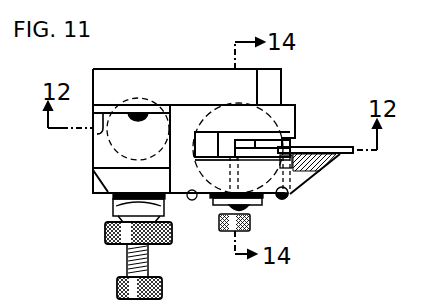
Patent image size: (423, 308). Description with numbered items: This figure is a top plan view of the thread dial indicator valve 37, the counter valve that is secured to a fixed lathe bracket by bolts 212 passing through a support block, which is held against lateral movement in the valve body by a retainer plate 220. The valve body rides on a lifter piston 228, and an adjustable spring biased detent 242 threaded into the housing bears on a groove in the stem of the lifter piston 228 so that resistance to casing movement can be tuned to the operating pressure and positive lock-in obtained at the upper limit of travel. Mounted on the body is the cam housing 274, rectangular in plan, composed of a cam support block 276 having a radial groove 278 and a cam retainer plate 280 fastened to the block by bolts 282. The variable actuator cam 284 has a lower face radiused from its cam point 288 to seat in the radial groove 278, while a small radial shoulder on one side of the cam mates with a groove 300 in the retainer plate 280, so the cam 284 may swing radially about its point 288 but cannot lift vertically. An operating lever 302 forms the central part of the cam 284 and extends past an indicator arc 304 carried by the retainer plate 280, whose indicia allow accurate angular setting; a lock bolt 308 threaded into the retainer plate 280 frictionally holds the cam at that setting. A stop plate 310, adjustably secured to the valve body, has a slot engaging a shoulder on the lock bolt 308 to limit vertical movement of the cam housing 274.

The thread dial indicator valve 37 is at (152, 60).
The cam support block 276 is at (188, 110).
The radial groove 278 is at (252, 130).
The cam housing 274 is at (302, 104).
The cam point 288 is at (232, 146).
The variable actuator cam 284 is at (258, 139).
The groove 300 is at (196, 162).
The bolts 212 is at (141, 122).
The lifter piston 228 is at (106, 150).
The retainer plate 220 is at (97, 134).
The operating lever 302 is at (355, 151).
The indicator arc 304 is at (332, 165).
The bolts 282 is at (290, 197).
The cam retainer plate 280 is at (272, 199).
The stop plate 310 is at (256, 206).
The lock bolt 308 is at (252, 229).
The adjustable spring biased detent 242 is at (116, 258).